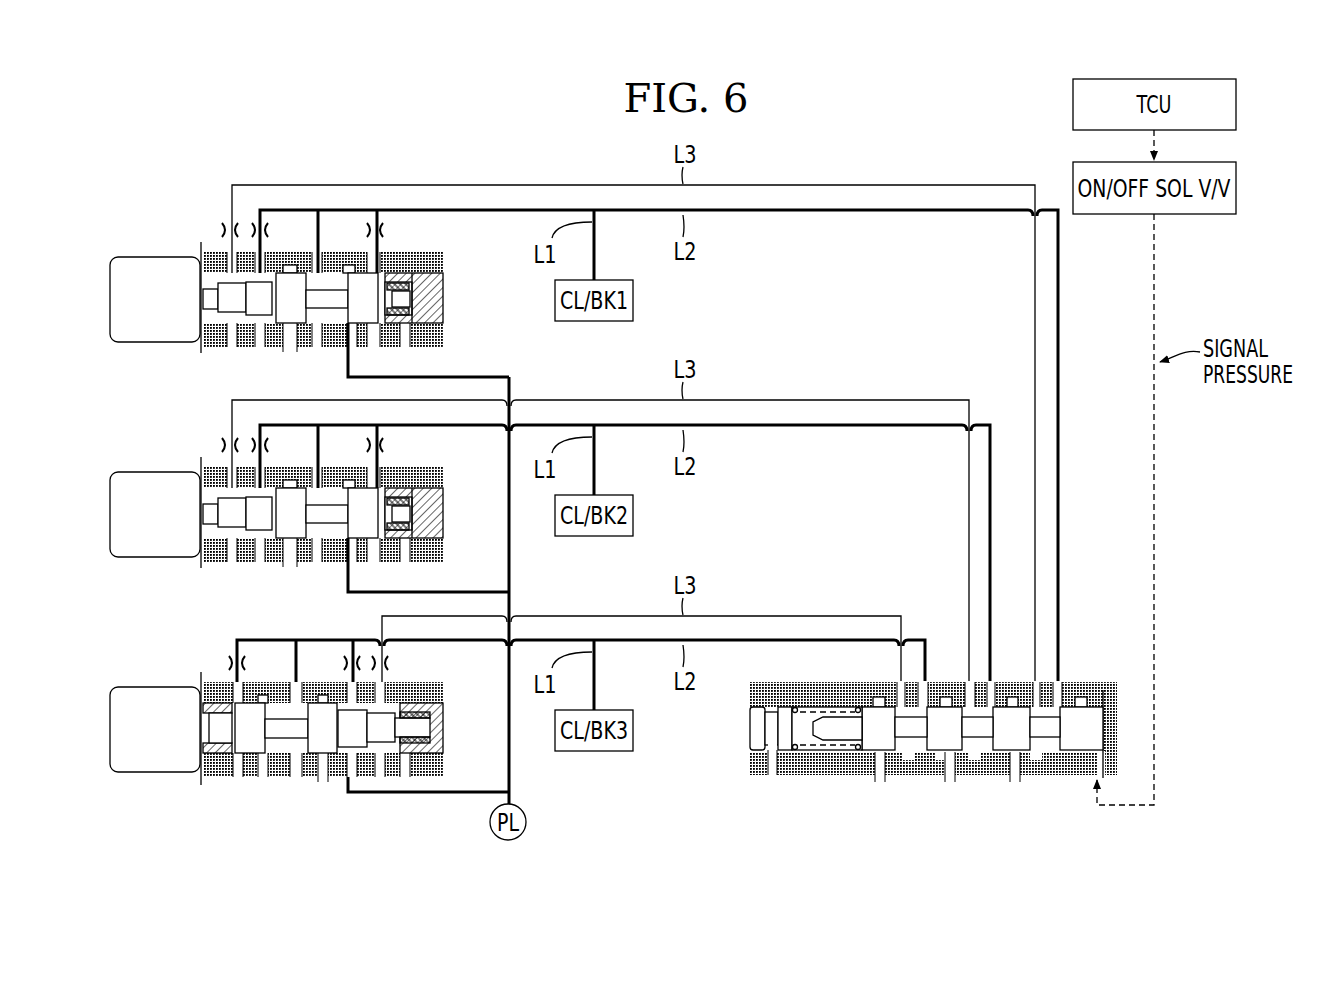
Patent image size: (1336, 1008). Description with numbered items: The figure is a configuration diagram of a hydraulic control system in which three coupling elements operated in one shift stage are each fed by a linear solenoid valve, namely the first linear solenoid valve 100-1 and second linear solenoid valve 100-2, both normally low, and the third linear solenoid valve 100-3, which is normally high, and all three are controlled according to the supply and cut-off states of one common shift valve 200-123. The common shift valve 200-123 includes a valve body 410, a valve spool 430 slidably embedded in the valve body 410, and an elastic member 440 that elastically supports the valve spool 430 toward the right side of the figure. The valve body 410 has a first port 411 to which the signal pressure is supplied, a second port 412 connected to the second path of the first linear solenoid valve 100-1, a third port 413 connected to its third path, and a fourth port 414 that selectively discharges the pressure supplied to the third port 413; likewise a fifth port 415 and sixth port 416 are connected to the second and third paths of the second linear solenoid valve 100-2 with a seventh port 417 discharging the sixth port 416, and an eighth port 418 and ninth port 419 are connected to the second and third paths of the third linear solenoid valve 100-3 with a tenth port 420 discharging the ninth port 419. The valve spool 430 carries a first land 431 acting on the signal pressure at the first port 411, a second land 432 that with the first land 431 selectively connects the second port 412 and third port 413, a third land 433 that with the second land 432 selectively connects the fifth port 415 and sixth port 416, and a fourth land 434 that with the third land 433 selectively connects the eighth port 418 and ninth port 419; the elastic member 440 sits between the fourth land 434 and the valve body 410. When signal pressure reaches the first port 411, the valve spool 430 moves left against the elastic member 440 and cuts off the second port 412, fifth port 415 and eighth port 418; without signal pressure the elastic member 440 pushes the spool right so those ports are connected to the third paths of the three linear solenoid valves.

The first linear solenoid valve 100-1 is at (216, 349).
The second linear solenoid valve 100-2 is at (309, 533).
The third linear solenoid valve 100-3 is at (216, 780).
The common shift valve 200-123 is at (917, 724).
The valve body 410 is at (1112, 688).
The first port 411 is at (1100, 762).
The second port 412 is at (1063, 682).
The third port 413 is at (1032, 680).
The fourth port 414 is at (1018, 762).
The fifth port 415 is at (996, 682).
The sixth port 416 is at (967, 680).
The seventh port 417 is at (942, 765).
The eighth port 418 is at (926, 682).
The ninth port 419 is at (898, 682).
The tenth port 420 is at (873, 762).
The valve spool 430 is at (972, 742).
The first land 431 is at (1100, 727).
The second land 432 is at (1023, 725).
The third land 433 is at (932, 730).
The fourth land 434 is at (865, 727).
The elastic member 440 is at (805, 707).